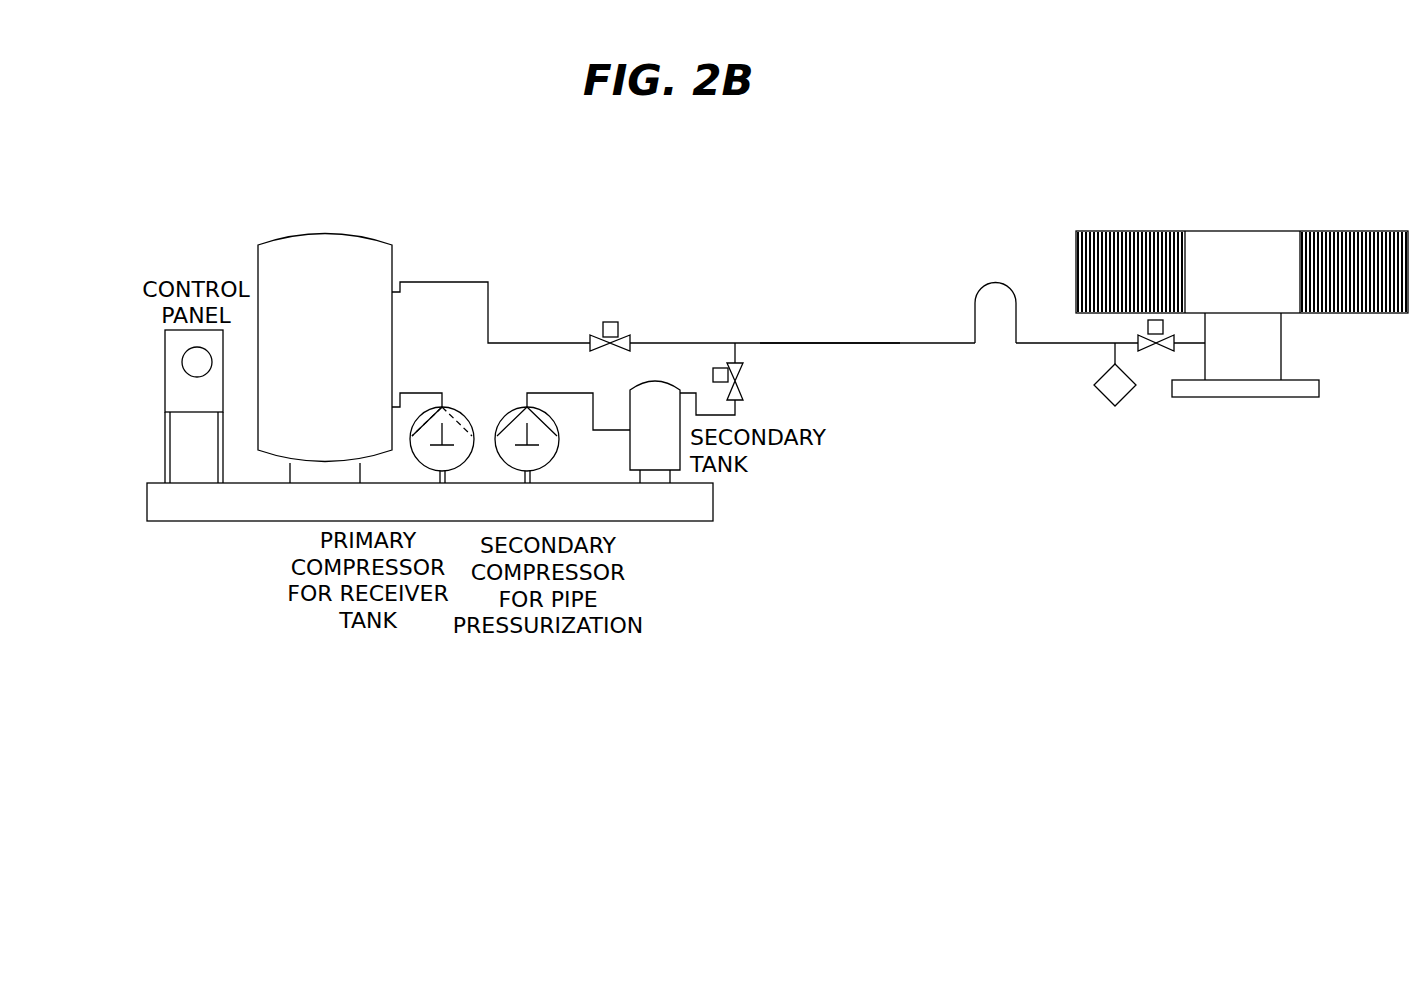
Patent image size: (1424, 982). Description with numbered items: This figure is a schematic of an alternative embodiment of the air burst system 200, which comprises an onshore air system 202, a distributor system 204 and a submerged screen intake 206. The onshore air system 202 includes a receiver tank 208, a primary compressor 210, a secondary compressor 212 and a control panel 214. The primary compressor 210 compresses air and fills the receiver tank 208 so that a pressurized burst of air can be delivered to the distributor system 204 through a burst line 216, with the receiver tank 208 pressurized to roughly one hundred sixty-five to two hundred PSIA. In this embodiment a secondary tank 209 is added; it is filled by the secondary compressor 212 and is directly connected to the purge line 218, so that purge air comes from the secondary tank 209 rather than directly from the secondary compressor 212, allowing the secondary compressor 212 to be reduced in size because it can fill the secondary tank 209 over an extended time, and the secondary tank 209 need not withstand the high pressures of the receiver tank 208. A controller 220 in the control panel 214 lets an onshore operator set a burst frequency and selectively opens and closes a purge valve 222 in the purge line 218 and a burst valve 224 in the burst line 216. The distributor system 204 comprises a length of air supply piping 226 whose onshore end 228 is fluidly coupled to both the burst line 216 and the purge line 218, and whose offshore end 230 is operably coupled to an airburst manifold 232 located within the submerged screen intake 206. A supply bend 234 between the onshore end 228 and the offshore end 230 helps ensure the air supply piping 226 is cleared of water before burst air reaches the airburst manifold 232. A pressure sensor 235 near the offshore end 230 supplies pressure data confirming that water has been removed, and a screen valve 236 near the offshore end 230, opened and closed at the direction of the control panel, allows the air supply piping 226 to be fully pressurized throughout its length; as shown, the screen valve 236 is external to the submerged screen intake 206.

The air burst system 200 is at (736, 128).
The onshore air system 202 is at (193, 522).
The distributor system 204 is at (944, 343).
The submerged screen intake 206 is at (1285, 231).
The receiver tank 208 is at (308, 235).
The secondary tank 209 is at (625, 455).
The primary compressor 210 is at (460, 410).
The secondary compressor 212 is at (558, 453).
The control panel 214 is at (173, 390).
The burst line 216 is at (436, 282).
The purge line 218 is at (690, 395).
The controller 220 is at (184, 354).
The purge valve 222 is at (745, 398).
The burst valve 224 is at (630, 338).
The air supply piping 226 is at (765, 343).
The onshore end 228 is at (740, 343).
The offshore end 230 is at (1202, 345).
The airburst manifold 232 is at (1283, 340).
The supply bend 234 is at (1012, 300).
The pressure sensor 235 is at (1122, 407).
The screen valve 236 is at (1166, 350).